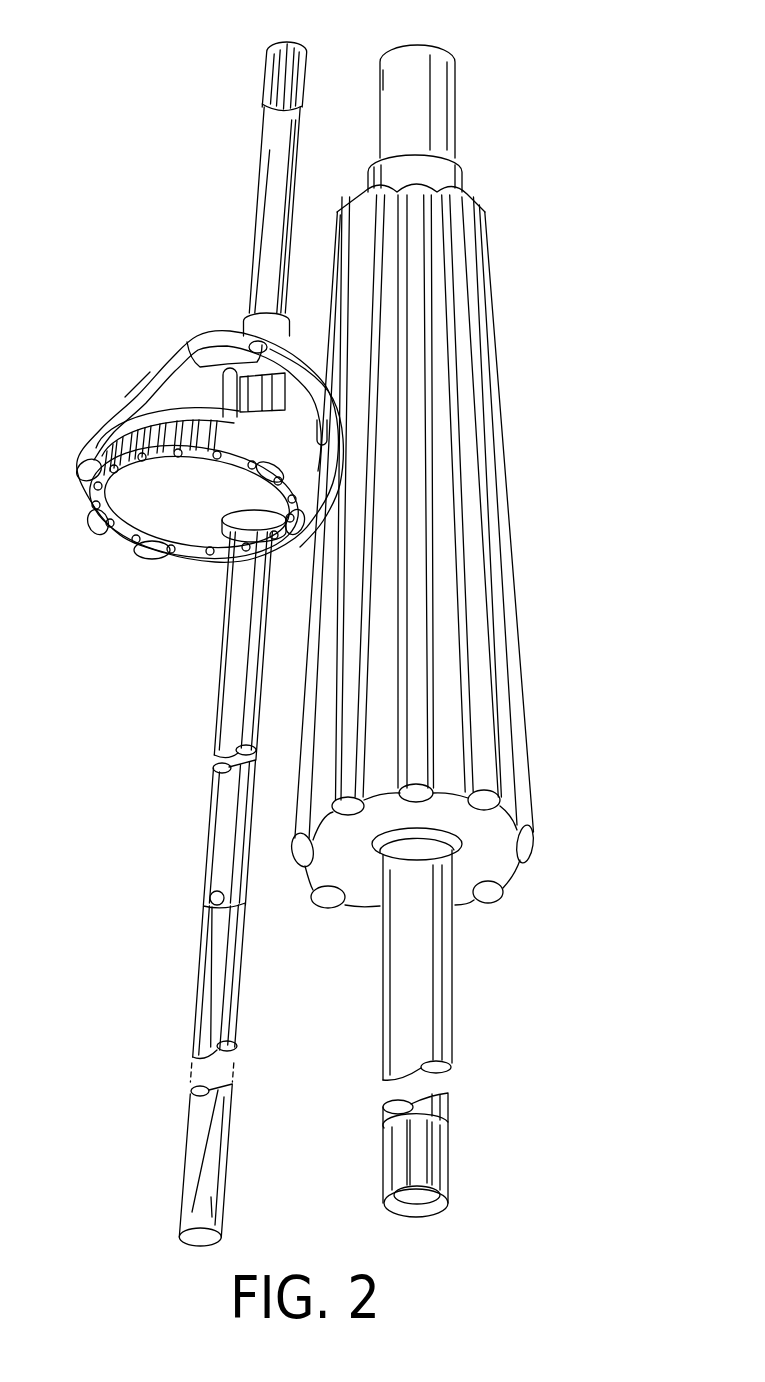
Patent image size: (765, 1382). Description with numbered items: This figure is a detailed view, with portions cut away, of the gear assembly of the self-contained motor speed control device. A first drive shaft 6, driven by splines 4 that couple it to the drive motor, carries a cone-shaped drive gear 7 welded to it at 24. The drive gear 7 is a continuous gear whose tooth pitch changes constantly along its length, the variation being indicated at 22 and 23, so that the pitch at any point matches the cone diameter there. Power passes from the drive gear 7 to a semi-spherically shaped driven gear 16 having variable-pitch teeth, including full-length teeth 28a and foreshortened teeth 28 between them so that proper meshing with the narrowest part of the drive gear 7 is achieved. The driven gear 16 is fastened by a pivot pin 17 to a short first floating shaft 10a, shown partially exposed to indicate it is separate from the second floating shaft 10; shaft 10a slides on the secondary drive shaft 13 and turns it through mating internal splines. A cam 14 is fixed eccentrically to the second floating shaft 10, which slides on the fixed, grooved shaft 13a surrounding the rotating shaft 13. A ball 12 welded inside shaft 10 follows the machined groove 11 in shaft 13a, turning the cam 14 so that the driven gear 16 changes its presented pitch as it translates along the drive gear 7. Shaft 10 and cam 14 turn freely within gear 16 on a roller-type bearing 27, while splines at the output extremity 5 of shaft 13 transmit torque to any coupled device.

The splines 4 is at (415, 1155).
The output extremity 5 is at (268, 54).
The first drive shaft 6 is at (448, 967).
The cone-shaped drive gear 7 is at (502, 718).
The second floating shaft 10 is at (238, 645).
The first floating shaft 10a is at (243, 320).
The machined groove 11 is at (222, 978).
The ball 12 is at (212, 897).
The secondary drive shaft 13 is at (260, 145).
The fixed shaft 13a is at (217, 1190).
The cam 14 is at (153, 492).
The driven gear 16 is at (130, 400).
The pivot pin 17 is at (247, 341).
The pitch variation 22 is at (440, 172).
The pitch variation 23 is at (440, 765).
The weld 24 is at (500, 867).
The bearing 27 is at (148, 443).
The foreshortened teeth 28 is at (183, 367).
The full-length teeth 28a is at (140, 378).